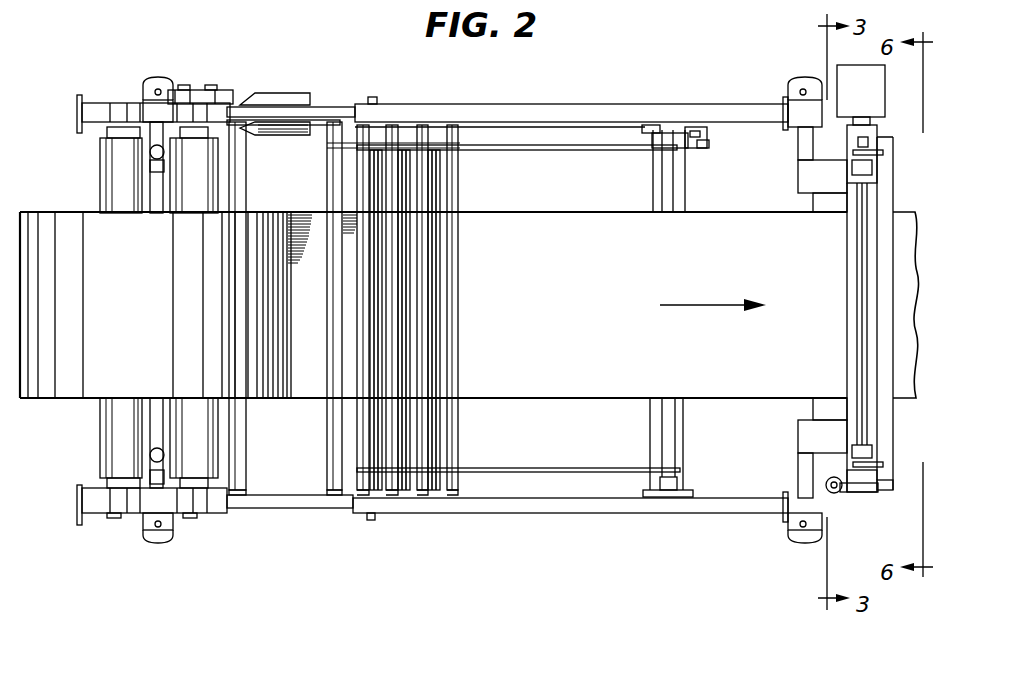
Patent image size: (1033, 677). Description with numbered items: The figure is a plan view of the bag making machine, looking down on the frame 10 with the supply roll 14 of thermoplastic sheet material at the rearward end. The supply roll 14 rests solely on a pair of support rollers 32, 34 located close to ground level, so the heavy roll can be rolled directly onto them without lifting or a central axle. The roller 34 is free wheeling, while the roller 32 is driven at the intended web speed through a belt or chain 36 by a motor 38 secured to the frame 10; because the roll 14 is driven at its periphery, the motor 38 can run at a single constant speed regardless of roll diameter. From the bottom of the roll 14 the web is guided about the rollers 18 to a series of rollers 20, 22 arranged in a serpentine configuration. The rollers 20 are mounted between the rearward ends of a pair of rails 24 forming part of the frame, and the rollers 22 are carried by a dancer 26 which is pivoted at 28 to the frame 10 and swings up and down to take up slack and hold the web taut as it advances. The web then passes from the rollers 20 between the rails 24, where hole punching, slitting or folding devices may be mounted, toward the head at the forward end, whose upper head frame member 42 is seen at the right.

The frame 10 is at (614, 118).
The supply roll 14 is at (69, 398).
The rollers 18 is at (328, 180).
The rollers 20 is at (373, 487).
The rollers 22 is at (380, 442).
The rails 24 is at (556, 110).
The dancer 26 is at (552, 150).
The pivot 28 is at (668, 441).
The support roller 32 is at (190, 192).
The support roller 34 is at (100, 174).
The belt or chain 36 is at (205, 96).
The motor 38 is at (285, 96).
The upper head frame member 42 is at (857, 500).